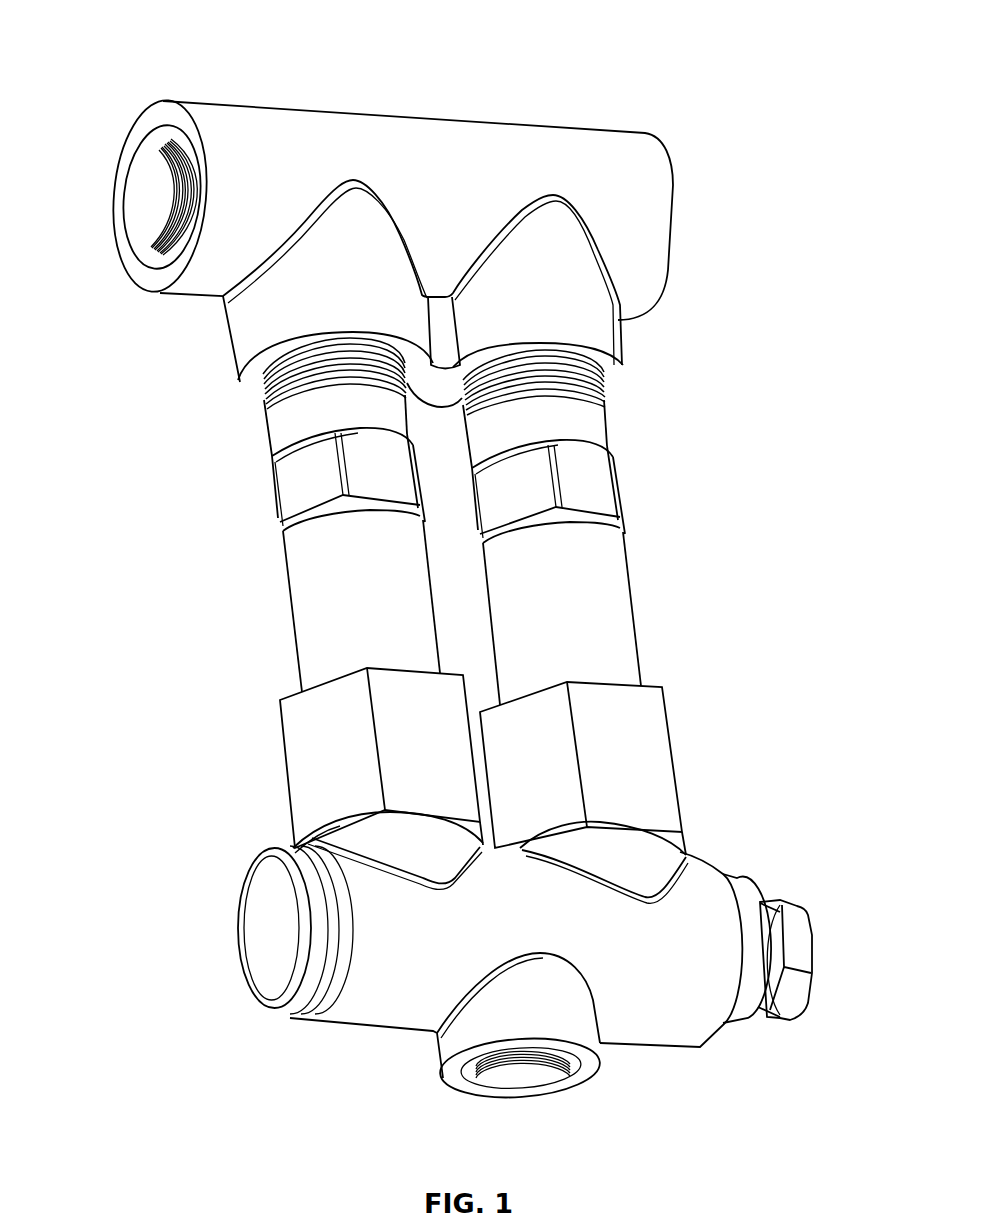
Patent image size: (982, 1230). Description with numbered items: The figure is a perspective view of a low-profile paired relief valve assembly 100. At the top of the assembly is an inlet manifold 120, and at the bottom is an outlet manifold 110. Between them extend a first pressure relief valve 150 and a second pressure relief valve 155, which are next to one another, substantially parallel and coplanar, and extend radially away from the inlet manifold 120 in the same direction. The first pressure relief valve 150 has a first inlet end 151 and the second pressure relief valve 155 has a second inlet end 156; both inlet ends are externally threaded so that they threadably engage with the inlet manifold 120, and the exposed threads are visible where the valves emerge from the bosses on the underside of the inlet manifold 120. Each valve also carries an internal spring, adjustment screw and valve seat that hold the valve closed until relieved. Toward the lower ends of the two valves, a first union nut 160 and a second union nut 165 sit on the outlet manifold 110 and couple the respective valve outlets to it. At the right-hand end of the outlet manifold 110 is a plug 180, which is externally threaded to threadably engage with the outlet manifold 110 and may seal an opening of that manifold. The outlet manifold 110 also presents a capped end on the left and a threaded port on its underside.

The low-profile paired relief valve assembly 100 is at (126, 42).
The outlet manifold 110 is at (667, 1033).
The inlet manifold 120 is at (664, 228).
The first pressure relief valve 150 is at (300, 598).
The first inlet end 151 is at (252, 383).
The second pressure relief valve 155 is at (620, 613).
The second inlet end 156 is at (604, 383).
The first union nut 160 is at (297, 743).
The second union nut 165 is at (660, 776).
The plug 180 is at (803, 950).